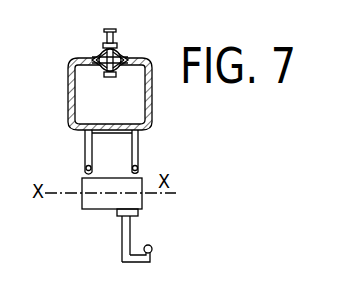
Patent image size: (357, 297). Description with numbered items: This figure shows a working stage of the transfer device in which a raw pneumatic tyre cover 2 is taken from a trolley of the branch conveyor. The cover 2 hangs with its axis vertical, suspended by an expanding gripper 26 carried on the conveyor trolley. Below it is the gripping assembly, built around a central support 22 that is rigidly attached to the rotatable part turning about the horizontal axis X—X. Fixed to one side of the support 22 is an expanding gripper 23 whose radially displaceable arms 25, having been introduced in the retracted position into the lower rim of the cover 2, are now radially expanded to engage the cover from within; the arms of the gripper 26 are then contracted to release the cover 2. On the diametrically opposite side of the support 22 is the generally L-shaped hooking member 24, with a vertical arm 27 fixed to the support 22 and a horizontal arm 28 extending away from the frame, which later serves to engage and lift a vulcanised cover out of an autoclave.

The pneumatic tyre cover 2 is at (152, 105).
The expanding gripper 26 is at (86, 42).
The expanding gripper 23 is at (64, 141).
The radially displaceable arms 25 is at (141, 130).
The central support 22 is at (143, 203).
The vertical arm 27 is at (133, 220).
The hooking member 24 is at (100, 239).
The horizontal arm 28 is at (137, 263).